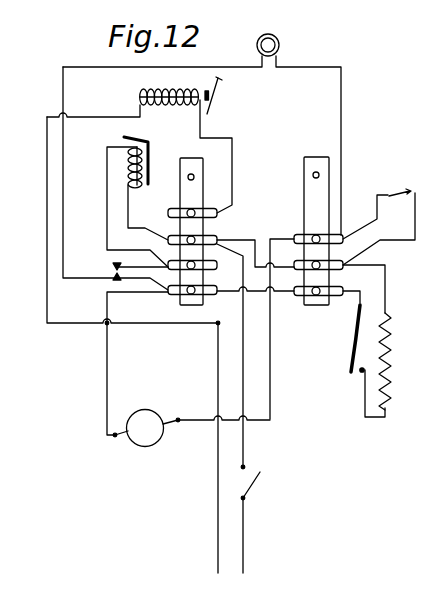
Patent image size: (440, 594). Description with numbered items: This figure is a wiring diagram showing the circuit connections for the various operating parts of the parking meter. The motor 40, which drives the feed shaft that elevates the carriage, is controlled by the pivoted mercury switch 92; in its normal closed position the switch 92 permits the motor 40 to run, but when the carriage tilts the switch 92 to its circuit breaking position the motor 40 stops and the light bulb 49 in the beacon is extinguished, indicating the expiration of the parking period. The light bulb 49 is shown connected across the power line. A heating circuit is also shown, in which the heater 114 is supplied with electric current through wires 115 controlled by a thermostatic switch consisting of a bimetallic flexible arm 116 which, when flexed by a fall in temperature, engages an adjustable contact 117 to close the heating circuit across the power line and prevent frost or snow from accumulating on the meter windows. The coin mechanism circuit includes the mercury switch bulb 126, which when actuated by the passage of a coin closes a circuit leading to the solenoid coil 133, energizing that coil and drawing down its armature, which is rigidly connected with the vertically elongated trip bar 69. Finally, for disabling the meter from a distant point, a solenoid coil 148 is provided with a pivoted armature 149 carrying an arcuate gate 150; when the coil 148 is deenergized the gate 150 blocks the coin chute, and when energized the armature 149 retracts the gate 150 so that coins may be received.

The light bulb 49 is at (279, 44).
The solenoid coil 148 is at (159, 90).
The pivoted armature 149 is at (219, 91).
The arcuate gate 150 is at (222, 80).
The trip bar 69 is at (152, 156).
The solenoid coil 133 is at (128, 165).
The switch bulb 126 is at (113, 269).
The pivoted mercury switch 92 is at (389, 193).
The wires 115 is at (388, 290).
The heater 114 is at (393, 342).
The bimetallic flexible arm 116 is at (355, 337).
The adjustable contact 117 is at (353, 381).
The motor 40 is at (145, 447).